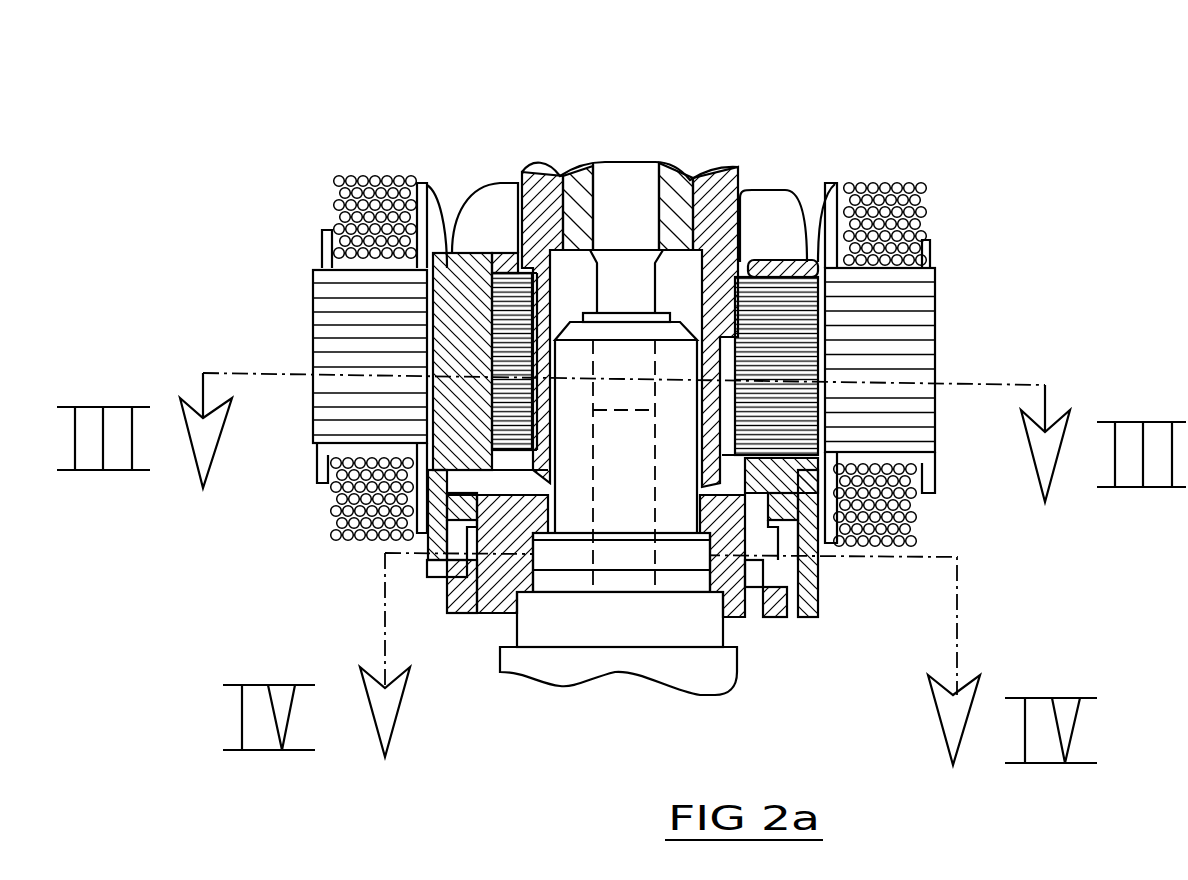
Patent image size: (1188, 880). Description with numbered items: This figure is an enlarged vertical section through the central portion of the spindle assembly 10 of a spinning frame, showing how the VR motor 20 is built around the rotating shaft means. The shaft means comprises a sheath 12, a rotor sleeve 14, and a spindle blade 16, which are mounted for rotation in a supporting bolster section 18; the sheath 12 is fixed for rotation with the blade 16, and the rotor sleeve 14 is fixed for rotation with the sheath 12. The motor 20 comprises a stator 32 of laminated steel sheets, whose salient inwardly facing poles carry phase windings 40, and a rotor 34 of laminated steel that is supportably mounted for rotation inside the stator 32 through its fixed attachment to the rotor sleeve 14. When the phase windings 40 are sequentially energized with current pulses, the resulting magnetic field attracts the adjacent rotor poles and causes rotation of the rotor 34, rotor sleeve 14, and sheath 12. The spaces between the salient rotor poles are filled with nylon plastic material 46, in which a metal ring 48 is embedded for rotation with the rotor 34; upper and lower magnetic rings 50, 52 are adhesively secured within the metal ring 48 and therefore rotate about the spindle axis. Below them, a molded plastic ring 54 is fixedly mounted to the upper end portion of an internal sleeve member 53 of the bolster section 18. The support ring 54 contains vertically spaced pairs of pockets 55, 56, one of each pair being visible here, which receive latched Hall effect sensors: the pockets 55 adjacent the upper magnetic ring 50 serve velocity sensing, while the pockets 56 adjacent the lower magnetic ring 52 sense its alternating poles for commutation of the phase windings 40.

The spindle assembly 10 is at (852, 130).
The sheath 12 is at (580, 200).
The rotor sleeve 14 is at (715, 205).
The spindle blade 16 is at (633, 187).
The bolster section 18 is at (713, 697).
The VR motor 20 is at (972, 220).
The stator 32 is at (918, 332).
The rotor 34 is at (792, 307).
The phase windings 40 is at (356, 178).
The nylon plastic material 46 is at (457, 277).
The metal ring 48 is at (427, 560).
The upper magnetic ring 50 is at (415, 530).
The lower magnetic ring 52 is at (445, 577).
The internal sleeve member 53 is at (603, 476).
The molded plastic ring 54 is at (500, 597).
The pockets 55 is at (463, 615).
The pockets 56 is at (783, 618).